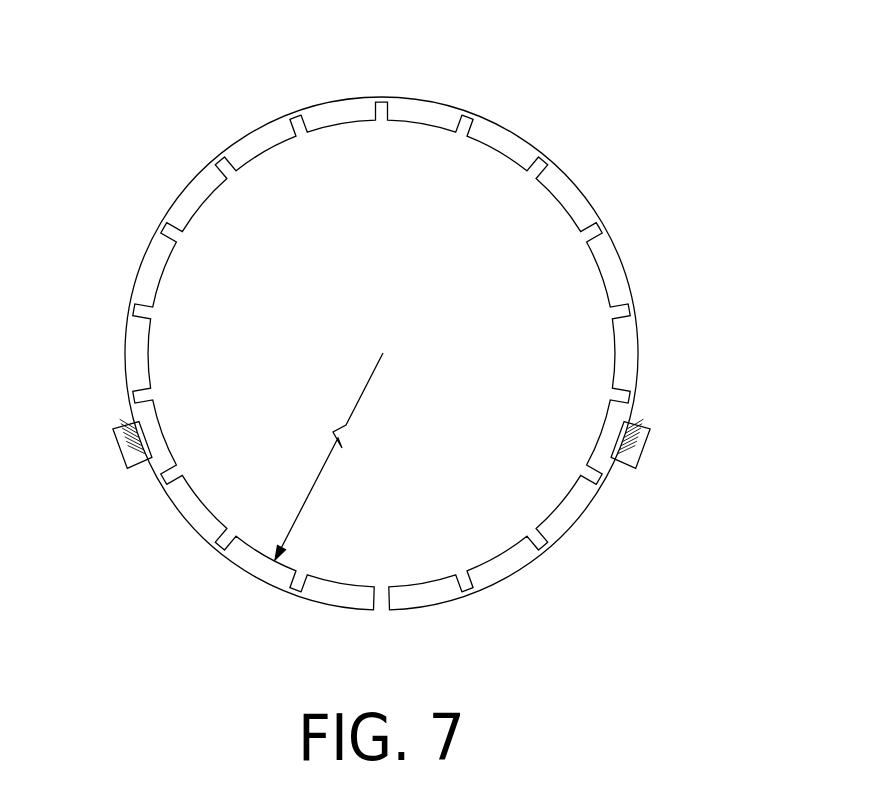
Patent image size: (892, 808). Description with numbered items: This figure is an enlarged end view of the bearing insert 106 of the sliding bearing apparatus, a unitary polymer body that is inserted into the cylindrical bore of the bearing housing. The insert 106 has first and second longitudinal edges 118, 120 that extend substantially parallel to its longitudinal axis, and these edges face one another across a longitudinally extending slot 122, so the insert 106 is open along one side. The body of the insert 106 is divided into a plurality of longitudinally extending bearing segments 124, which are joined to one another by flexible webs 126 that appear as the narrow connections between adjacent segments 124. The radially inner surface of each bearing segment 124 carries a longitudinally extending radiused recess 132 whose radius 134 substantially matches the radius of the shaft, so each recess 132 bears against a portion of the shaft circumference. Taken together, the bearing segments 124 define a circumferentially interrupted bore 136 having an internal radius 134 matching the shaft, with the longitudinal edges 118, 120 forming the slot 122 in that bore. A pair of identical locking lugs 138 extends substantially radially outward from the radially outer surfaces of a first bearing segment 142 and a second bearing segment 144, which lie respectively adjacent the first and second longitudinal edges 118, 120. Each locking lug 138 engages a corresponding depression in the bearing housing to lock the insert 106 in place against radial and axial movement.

The bearing insert 106 is at (618, 209).
The first longitudinal edge 118 is at (378, 610).
The second longitudinal edge 120 is at (378, 588).
The longitudinally extending slot 122 is at (393, 604).
The bearing segments 124 is at (263, 140).
The flexible webs 126 is at (218, 160).
The radiused recess 132 is at (253, 550).
The radius 134 is at (350, 413).
The circumferentially interrupted bore 136 is at (467, 192).
The locking lugs 138 is at (115, 448).
The first bearing segment 142 is at (135, 412).
The second bearing segment 144 is at (628, 411).